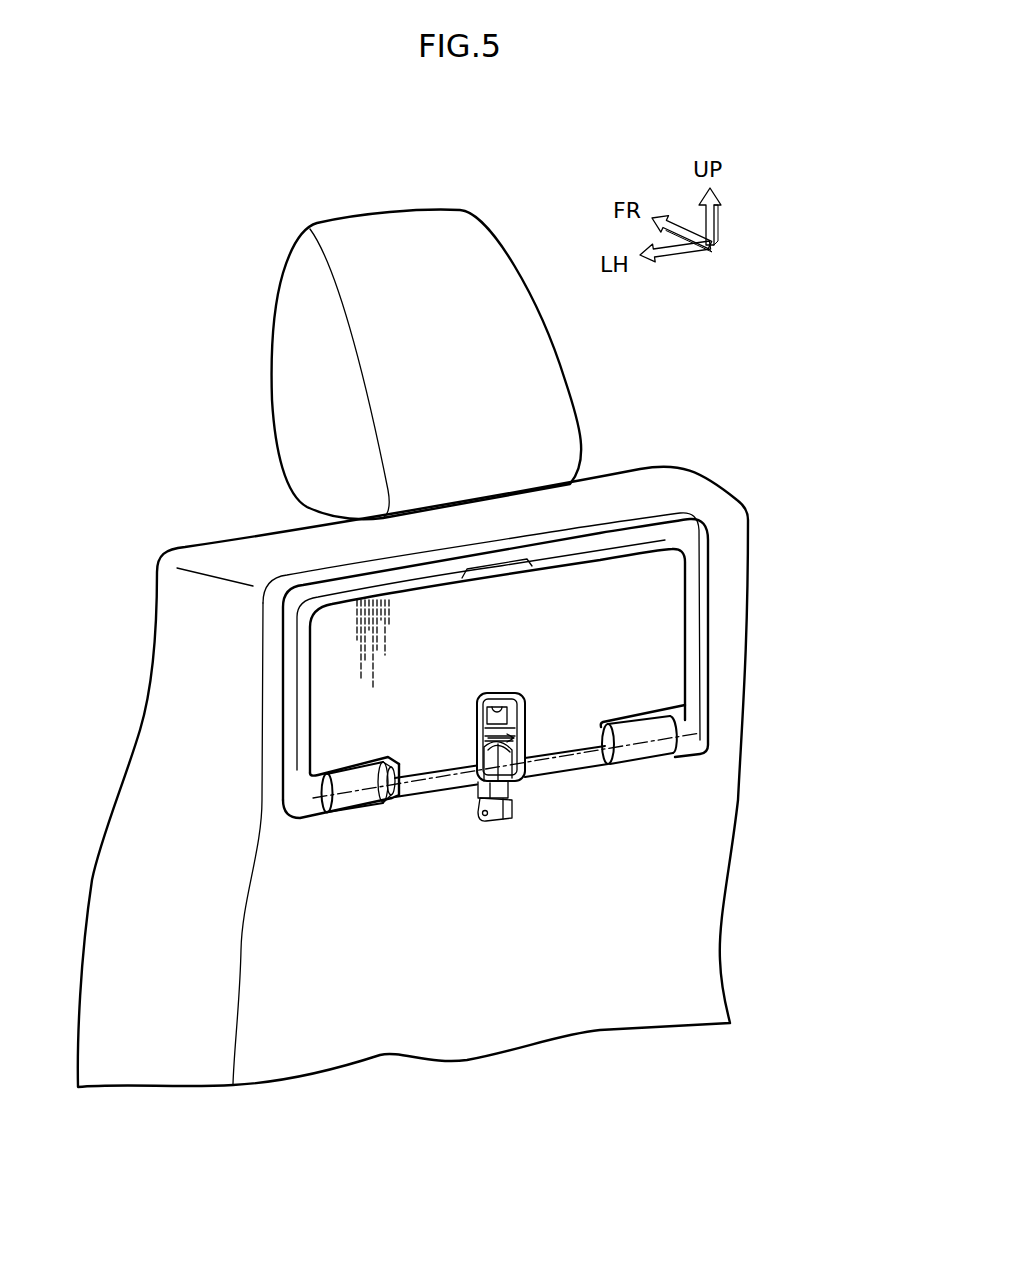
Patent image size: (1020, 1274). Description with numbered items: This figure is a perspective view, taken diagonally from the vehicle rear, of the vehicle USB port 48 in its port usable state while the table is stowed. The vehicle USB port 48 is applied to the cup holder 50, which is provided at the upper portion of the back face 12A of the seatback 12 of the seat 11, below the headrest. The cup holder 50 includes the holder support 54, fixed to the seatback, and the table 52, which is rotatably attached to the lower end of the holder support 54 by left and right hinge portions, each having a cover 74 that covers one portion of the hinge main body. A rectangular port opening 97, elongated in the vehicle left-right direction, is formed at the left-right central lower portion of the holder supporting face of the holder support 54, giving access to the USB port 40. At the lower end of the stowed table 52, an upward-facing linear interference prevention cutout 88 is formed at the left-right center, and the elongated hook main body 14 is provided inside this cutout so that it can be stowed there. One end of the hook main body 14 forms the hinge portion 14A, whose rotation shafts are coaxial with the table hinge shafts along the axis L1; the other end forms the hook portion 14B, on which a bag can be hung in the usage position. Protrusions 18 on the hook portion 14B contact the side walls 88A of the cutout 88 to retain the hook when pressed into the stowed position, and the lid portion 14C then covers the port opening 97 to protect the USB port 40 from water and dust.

The seat 11 is at (113, 693).
The seatback 12 is at (753, 527).
The back face of the seatback 12A is at (733, 651).
The hook main body 14 is at (472, 802).
The hinge portion 14A is at (516, 738).
The hook portion 14B is at (505, 818).
The lid portion 14C is at (508, 796).
The protrusions 18 is at (485, 820).
The USB port 40 is at (482, 702).
The vehicle USB port 48 is at (725, 678).
The cup holder 50 is at (811, 535).
The table 52 is at (658, 637).
The holder support 54 is at (712, 577).
The cover 74 is at (356, 799).
The interference prevention cutout 88 is at (480, 748).
The side walls 88A is at (512, 718).
The port opening 97 is at (500, 696).
The axis of the rotation shafts L1 is at (415, 777).